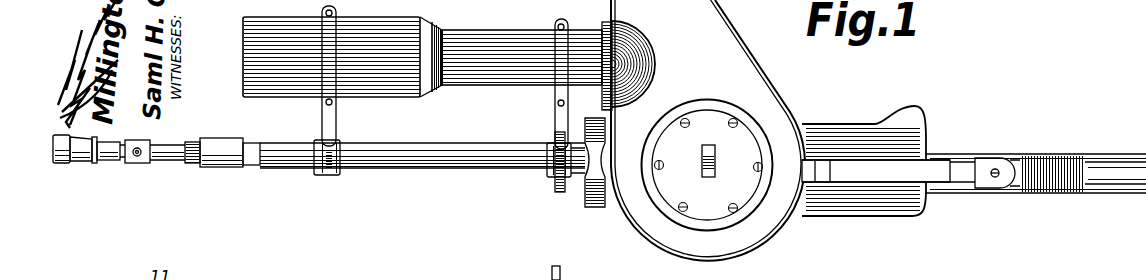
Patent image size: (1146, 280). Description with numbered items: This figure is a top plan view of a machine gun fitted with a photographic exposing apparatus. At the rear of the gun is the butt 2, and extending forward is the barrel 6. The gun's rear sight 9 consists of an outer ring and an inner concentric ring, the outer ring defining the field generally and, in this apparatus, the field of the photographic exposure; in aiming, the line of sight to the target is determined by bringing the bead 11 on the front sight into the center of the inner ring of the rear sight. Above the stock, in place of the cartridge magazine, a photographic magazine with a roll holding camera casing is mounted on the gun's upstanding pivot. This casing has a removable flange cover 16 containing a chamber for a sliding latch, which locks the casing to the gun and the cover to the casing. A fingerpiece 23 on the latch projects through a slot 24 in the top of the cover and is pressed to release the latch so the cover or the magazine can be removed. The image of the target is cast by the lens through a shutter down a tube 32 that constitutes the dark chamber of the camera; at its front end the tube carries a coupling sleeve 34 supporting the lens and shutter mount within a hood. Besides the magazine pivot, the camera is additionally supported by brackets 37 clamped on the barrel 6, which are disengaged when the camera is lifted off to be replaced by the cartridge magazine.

The butt 2 is at (1103, 180).
The barrel 6 is at (466, 166).
The rear sight 9 is at (556, 182).
The bead 11 is at (143, 141).
The flange cover 16 is at (682, 70).
The fingerpiece 23 is at (702, 163).
The slot 24 is at (715, 162).
The tube 32 is at (475, 34).
The coupling sleeve 34 is at (438, 96).
The brackets 37 is at (332, 125).